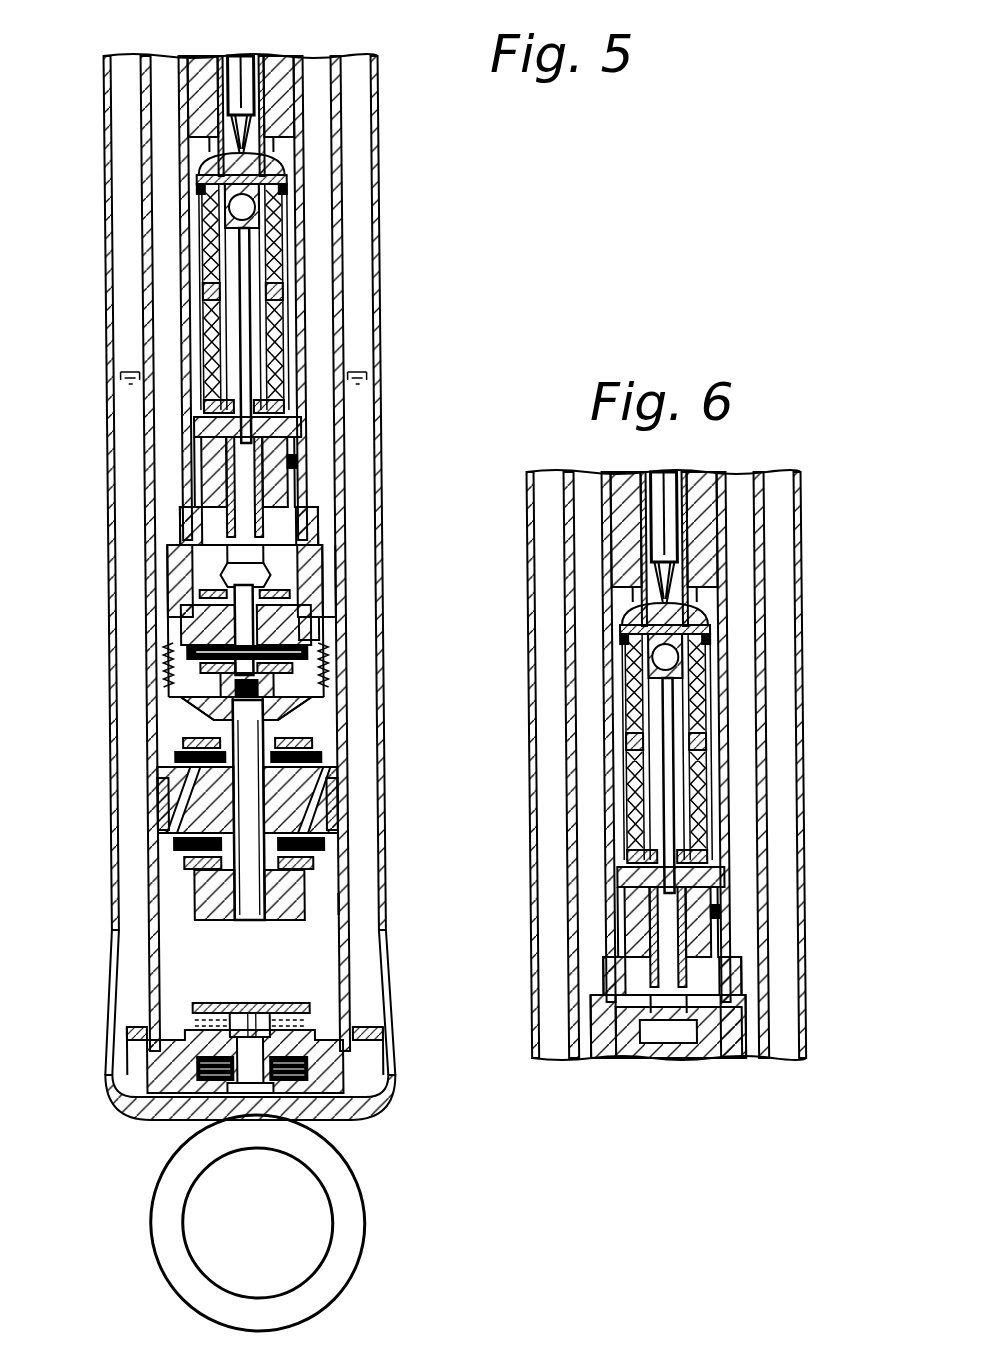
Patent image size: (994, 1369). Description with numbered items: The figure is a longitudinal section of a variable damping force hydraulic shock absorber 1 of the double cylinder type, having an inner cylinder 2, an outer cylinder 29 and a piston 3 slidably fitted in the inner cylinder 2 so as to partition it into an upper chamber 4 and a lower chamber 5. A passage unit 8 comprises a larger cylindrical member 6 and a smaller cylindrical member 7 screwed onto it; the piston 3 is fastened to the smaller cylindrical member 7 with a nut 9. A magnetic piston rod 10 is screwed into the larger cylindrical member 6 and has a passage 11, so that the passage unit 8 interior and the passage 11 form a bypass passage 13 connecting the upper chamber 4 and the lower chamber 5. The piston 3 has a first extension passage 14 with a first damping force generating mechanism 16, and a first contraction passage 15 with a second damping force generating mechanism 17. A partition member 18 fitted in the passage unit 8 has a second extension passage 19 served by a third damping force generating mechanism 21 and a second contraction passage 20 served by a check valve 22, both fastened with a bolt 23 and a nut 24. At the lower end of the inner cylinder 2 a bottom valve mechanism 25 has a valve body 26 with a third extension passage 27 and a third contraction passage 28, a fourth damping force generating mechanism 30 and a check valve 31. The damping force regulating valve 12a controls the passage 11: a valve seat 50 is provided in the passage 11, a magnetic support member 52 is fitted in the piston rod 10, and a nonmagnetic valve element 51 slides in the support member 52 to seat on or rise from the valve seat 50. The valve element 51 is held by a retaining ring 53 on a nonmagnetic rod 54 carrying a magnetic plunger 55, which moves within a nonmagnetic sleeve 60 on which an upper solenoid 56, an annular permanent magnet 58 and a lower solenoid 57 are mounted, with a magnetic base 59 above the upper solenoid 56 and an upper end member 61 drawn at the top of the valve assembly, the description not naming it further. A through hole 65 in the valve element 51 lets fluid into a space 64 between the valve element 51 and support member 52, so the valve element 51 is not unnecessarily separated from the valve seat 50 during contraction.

In FIG. 5, the hydraulic shock absorber 1 is at (392, 56).
In FIG. 5, the inner cylinder 2 is at (366, 940).
In FIG. 5, the piston 3 is at (332, 822).
In FIG. 5, the upper chamber 4 is at (322, 93).
In FIG. 6, the upper chamber 4 is at (709, 765).
In FIG. 5, the lower chamber 5 is at (332, 972).
In FIG. 5, the larger cylindrical member 6 is at (300, 602).
In FIG. 5, the smaller cylindrical member 7 is at (300, 712).
In FIG. 5, the passage unit 8 is at (330, 628).
In FIG. 5, the nut 9 is at (298, 880).
In FIG. 5, the piston rod 10 is at (303, 126).
In FIG. 6, the piston rod 10 is at (730, 737).
In FIG. 5, the passage 11 is at (301, 522).
In FIG. 6, the passage 11 is at (731, 941).
In FIG. 5, the damping force regulating valve 12a is at (303, 318).
In FIG. 6, the damping force regulating valve 12a is at (745, 747).
In FIG. 5, the bypass passage 13 is at (292, 556).
In FIG. 6, the bypass passage 13 is at (736, 1023).
In FIG. 5, the first extension passage 14 is at (332, 783).
In FIG. 5, the first contraction passage 15 is at (152, 793).
In FIG. 5, the first damping force generating mechanism 16 is at (317, 846).
In FIG. 5, the second damping force generating mechanism 17 is at (307, 746).
In FIG. 5, the partition member 18 is at (180, 636).
In FIG. 5, the second extension passage 19 is at (303, 651).
In FIG. 5, the second contraction passage 20 is at (185, 598).
In FIG. 5, the third damping force generating mechanism 21 is at (305, 668).
In FIG. 5, the check valve 22 is at (187, 560).
In FIG. 5, the bolt 23 is at (185, 676).
In FIG. 5, the nut 24 is at (225, 697).
In FIG. 5, the bottom valve mechanism 25 is at (185, 1000).
In FIG. 5, the valve body 26 is at (140, 1076).
In FIG. 5, the third extension passage 27 is at (340, 1040).
In FIG. 5, the third contraction passage 28 is at (346, 1068).
In FIG. 5, the outer cylinder 29 is at (336, 905).
In FIG. 5, the fourth damping force generating mechanism 30 is at (363, 1104).
In FIG. 5, the check valve 31 is at (302, 1008).
In FIG. 5, the valve seat 50 is at (164, 536).
In FIG. 6, the valve seat 50 is at (609, 1024).
In FIG. 5, the valve element 51 is at (212, 480).
In FIG. 6, the valve element 51 is at (753, 932).
In FIG. 5, the support member 52 is at (196, 418).
In FIG. 6, the support member 52 is at (597, 882).
In FIG. 5, the retaining ring 53 is at (205, 447).
In FIG. 5, the rod 54 is at (236, 352).
In FIG. 6, the rod 54 is at (573, 785).
In FIG. 5, the plunger 55 is at (200, 258).
In FIG. 6, the plunger 55 is at (588, 689).
In FIG. 5, the upper solenoid 56 is at (222, 206).
In FIG. 6, the upper solenoid 56 is at (576, 668).
In FIG. 5, the lower solenoid 57 is at (200, 323).
In FIG. 6, the lower solenoid 57 is at (588, 800).
In FIG. 5, the permanent magnet 58 is at (199, 291).
In FIG. 6, the permanent magnet 58 is at (589, 756).
In FIG. 5, the base 59 is at (287, 185).
In FIG. 6, the base 59 is at (591, 642).
In FIG. 5, the sleeve 60 is at (288, 340).
In FIG. 6, the sleeve 60 is at (770, 747).
In FIG. 5, the cap nut 61 is at (200, 150).
In FIG. 5, the space 64 is at (292, 415).
In FIG. 6, the space 64 is at (788, 913).
In FIG. 5, the through hole 65 is at (292, 462).
In FIG. 6, the through hole 65 is at (784, 926).